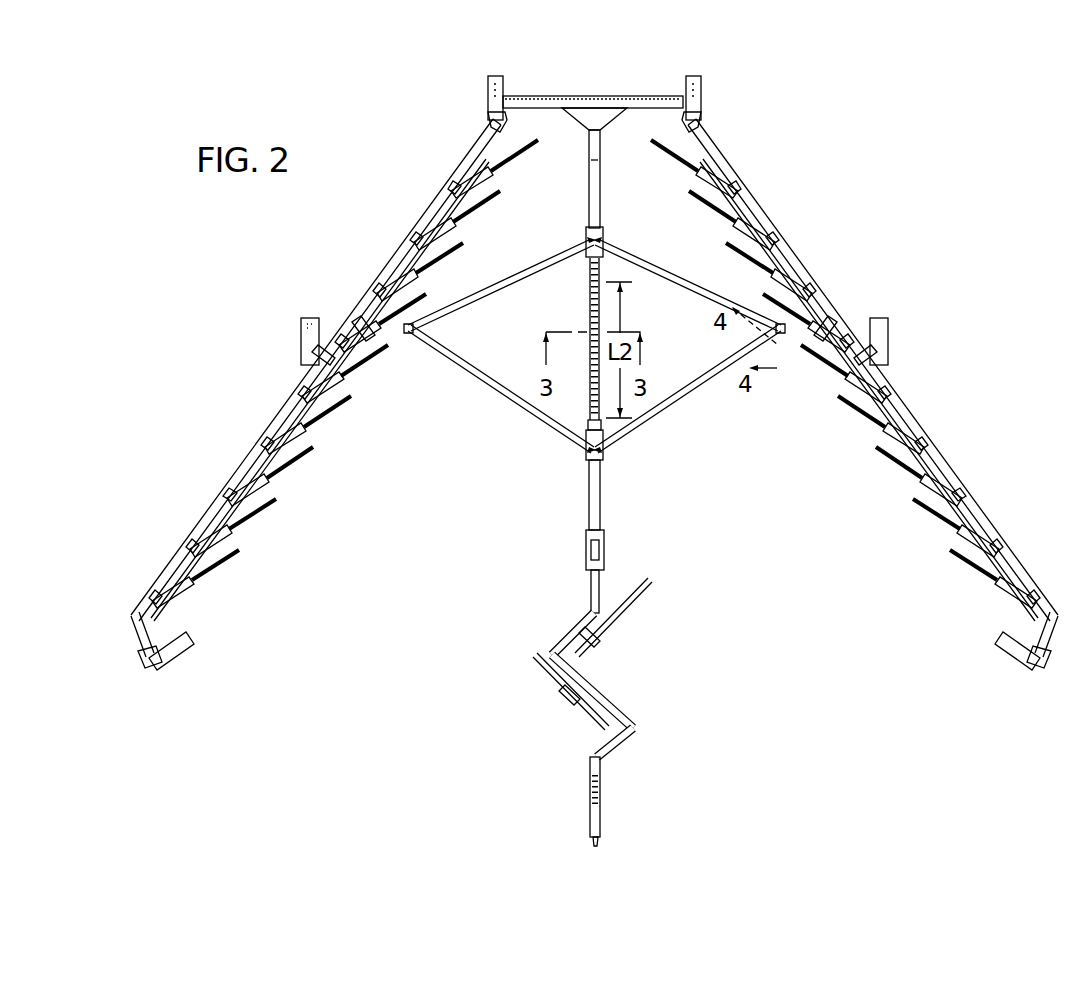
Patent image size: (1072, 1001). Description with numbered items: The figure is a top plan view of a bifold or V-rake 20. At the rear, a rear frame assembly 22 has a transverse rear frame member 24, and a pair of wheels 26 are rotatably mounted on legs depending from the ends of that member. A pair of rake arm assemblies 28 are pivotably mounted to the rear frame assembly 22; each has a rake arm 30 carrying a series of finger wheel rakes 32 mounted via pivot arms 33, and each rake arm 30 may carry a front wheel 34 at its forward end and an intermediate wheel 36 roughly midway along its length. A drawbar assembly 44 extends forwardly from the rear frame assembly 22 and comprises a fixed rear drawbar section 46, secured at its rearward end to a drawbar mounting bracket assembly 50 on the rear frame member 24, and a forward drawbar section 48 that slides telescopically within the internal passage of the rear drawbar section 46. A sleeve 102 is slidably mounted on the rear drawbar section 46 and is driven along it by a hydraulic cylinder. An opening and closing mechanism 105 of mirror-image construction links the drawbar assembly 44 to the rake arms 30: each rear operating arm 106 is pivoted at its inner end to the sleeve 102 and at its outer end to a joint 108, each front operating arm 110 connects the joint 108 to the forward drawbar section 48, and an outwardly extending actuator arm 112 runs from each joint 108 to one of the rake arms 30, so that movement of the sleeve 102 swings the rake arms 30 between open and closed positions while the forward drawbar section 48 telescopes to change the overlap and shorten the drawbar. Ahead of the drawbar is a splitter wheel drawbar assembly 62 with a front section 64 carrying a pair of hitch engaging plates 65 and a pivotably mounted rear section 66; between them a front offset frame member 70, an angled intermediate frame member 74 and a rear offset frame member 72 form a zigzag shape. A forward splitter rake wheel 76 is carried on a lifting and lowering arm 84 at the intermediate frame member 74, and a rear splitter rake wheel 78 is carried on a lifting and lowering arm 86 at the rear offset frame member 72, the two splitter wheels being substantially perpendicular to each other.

The V-rake 20 is at (906, 247).
The rear frame assembly 22 is at (630, 93).
The transverse rear frame member 24 is at (526, 93).
The wheels 26 is at (488, 118).
The rake arm assemblies 28 is at (226, 410).
The rake arm 30 is at (421, 224).
The finger wheel rakes 32 is at (333, 422).
The pivot arms 33 is at (204, 530).
The front wheel 34 is at (168, 662).
The intermediate wheel 36 is at (302, 343).
The drawbar assembly 44 is at (553, 337).
The rear drawbar section 46 is at (588, 150).
The forward drawbar section 48 is at (600, 503).
The drawbar mounting bracket assembly 50 is at (592, 112).
The splitter wheel drawbar assembly 62 is at (565, 692).
The front section 64 is at (594, 807).
The hitch engaging plates 65 is at (592, 843).
The rear section 66 is at (590, 590).
The front offset frame member 70 is at (605, 757).
The rear offset frame member 72 is at (575, 628).
The angled intermediate frame member 74 is at (612, 692).
The forward splitter rake wheel 76 is at (525, 695).
The rear splitter rake wheel 78 is at (653, 621).
The lifting and lowering arm 84 is at (582, 716).
The lifting and lowering arm 86 is at (600, 640).
The sleeve 102 is at (600, 230).
The opening and closing mechanism 105 is at (618, 372).
The rear operating arm 106 is at (487, 283).
The joint 108 is at (401, 347).
The front operating arm 110 is at (503, 400).
The actuator arm 112 is at (362, 323).